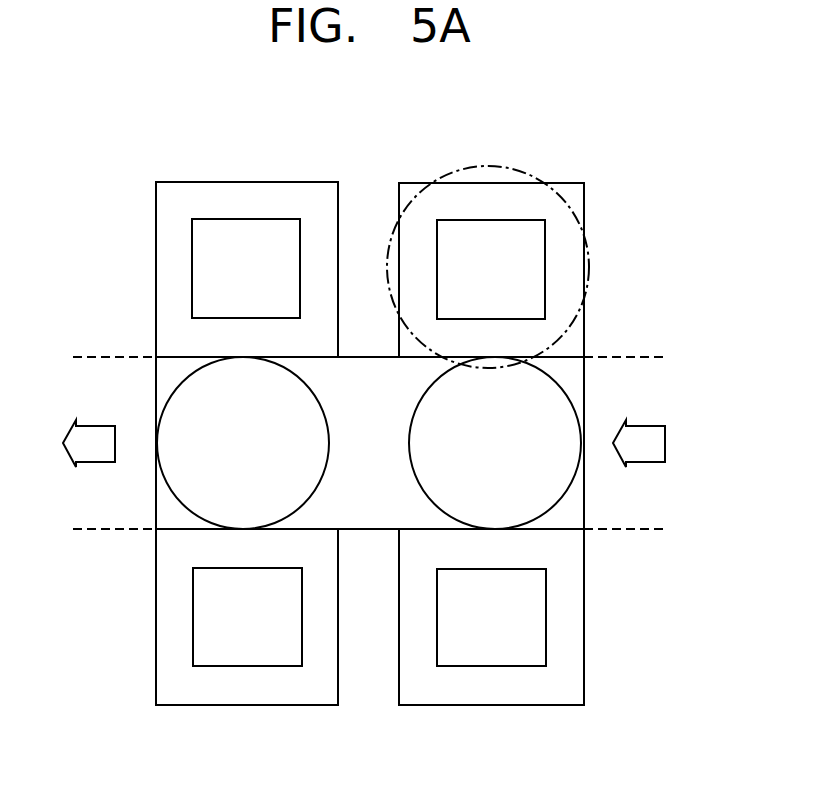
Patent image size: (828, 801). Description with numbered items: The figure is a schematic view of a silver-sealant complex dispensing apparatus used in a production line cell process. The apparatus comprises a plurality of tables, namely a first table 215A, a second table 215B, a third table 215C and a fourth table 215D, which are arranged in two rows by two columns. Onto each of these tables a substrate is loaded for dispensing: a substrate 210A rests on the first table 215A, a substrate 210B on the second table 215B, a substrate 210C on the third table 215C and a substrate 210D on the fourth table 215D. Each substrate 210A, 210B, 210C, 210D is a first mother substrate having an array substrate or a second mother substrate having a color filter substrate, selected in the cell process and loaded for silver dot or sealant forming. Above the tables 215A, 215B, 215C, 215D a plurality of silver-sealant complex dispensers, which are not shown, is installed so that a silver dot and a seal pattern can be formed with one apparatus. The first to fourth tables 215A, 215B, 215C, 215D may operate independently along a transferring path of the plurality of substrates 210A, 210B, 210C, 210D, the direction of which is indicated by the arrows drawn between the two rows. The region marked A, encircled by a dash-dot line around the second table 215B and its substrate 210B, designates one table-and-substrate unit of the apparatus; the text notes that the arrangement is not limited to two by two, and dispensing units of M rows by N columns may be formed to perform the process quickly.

The substrate 210A is at (246, 219).
The substrate 210B is at (490, 220).
The substrate 210C is at (247, 666).
The substrate 210D is at (493, 666).
The first table 215A is at (156, 268).
The second table 215B is at (584, 268).
The third table 215C is at (156, 617).
The fourth table 215D is at (584, 617).
The enlarged portion A is at (538, 170).